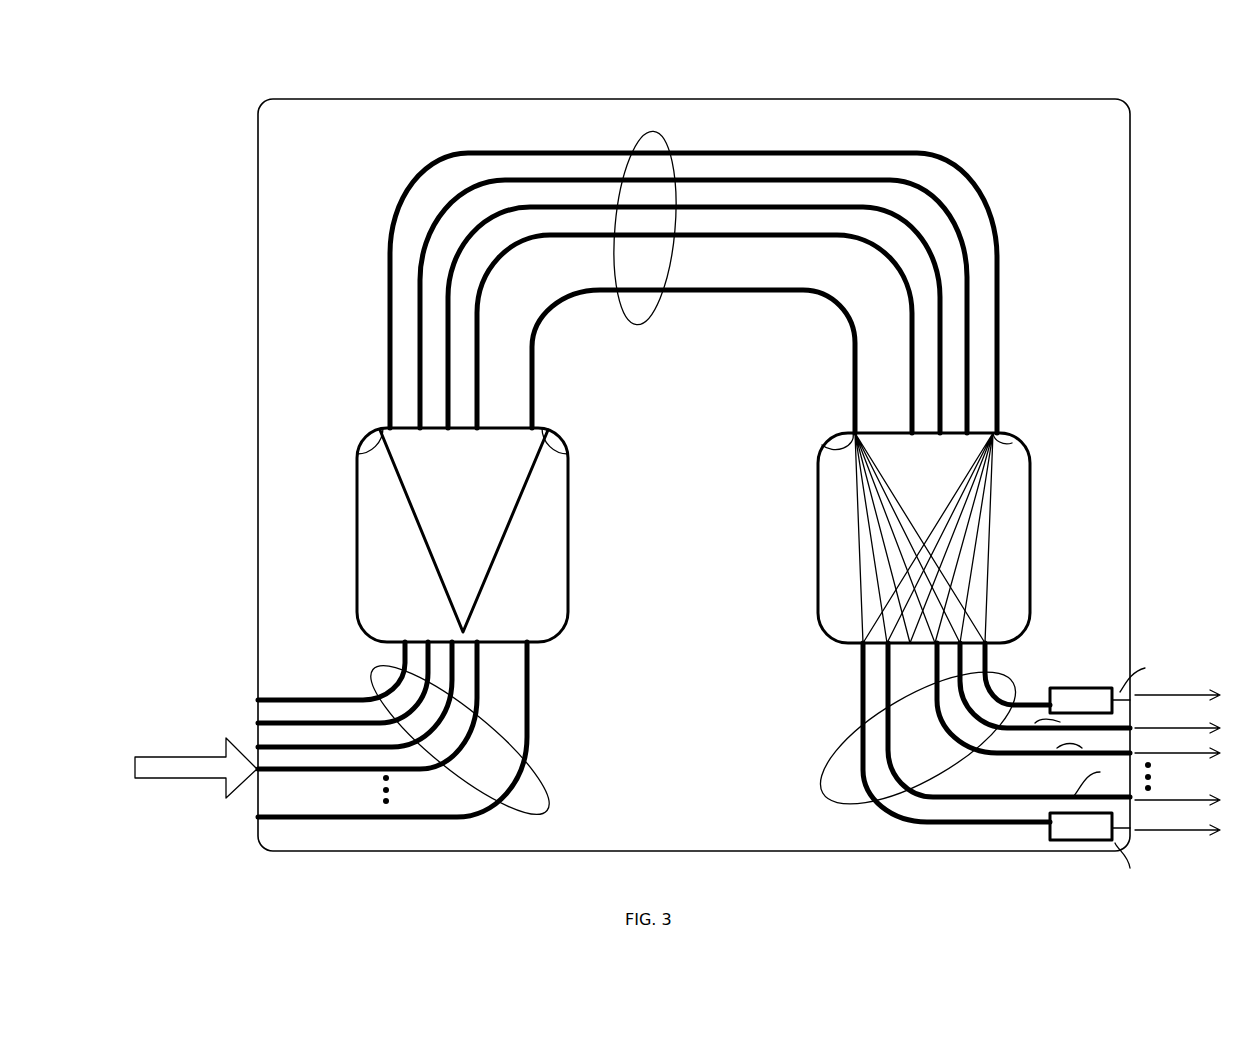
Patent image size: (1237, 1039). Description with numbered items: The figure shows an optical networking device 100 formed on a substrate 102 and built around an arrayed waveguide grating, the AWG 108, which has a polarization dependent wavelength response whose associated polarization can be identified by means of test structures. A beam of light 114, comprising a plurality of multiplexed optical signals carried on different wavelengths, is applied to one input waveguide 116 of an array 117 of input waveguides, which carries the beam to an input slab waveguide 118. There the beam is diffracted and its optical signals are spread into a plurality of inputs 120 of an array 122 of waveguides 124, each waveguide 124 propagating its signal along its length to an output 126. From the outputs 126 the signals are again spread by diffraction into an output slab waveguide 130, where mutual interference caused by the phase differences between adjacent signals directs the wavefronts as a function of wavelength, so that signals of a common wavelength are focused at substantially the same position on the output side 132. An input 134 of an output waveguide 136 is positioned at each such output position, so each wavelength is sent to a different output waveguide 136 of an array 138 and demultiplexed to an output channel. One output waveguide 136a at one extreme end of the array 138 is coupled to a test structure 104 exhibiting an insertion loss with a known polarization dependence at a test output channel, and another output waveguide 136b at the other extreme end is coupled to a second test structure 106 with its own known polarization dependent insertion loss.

The optical networking device 100 is at (243, 90).
The substrate 102 is at (728, 99).
The test structure 104 is at (1070, 688).
The test structure 106 is at (1060, 840).
The AWG 108 is at (1068, 120).
The beam of light 114 is at (187, 770).
The input waveguide 116 is at (333, 775).
The array of input waveguides 117 is at (373, 672).
The input slab waveguide 118 is at (568, 540).
The inputs 120 is at (362, 452).
The array of waveguides 122 is at (643, 133).
The waveguide 124 is at (798, 152).
The output 126 is at (830, 440).
The output slab waveguide 130 is at (1030, 540).
The output side 132 is at (843, 648).
The input 134 is at (852, 652).
The output waveguide 136 is at (998, 753).
The output waveguide 136a is at (1045, 700).
The output waveguide 136b is at (958, 823).
The array of waveguides 138 is at (835, 793).